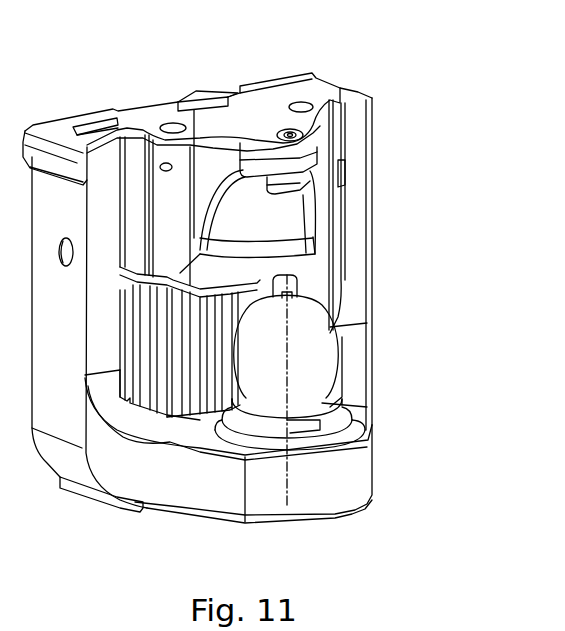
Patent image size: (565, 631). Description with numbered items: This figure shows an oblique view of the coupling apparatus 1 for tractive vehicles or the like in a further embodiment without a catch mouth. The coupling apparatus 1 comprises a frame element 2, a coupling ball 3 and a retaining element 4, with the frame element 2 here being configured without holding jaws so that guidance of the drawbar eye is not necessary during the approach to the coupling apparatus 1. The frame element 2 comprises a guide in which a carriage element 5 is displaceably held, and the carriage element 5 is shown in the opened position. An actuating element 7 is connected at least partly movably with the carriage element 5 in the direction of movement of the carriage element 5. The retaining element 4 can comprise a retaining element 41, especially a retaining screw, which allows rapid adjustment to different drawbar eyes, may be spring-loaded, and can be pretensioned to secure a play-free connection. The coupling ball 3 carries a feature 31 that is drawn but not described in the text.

The coupling apparatus 1 is at (98, 538).
The frame element 2 is at (184, 486).
The coupling ball 3 is at (318, 366).
The ball stem / nub 31 is at (297, 293).
The retaining element 4 is at (293, 157).
The retaining element (retaining screw) 41 is at (297, 183).
The carriage element 5 is at (270, 100).
The actuating element 7 is at (200, 88).